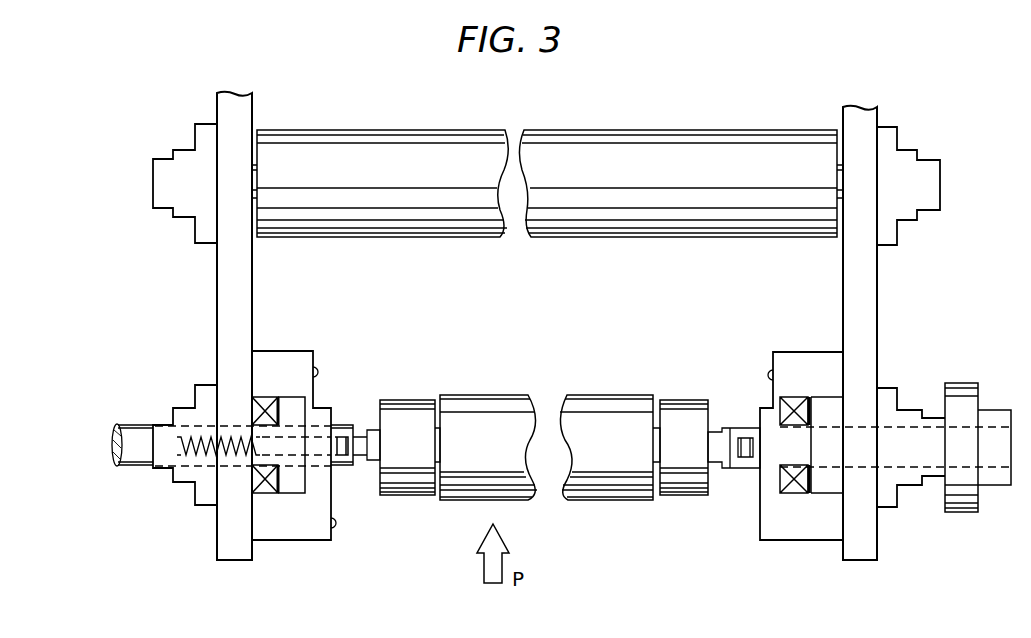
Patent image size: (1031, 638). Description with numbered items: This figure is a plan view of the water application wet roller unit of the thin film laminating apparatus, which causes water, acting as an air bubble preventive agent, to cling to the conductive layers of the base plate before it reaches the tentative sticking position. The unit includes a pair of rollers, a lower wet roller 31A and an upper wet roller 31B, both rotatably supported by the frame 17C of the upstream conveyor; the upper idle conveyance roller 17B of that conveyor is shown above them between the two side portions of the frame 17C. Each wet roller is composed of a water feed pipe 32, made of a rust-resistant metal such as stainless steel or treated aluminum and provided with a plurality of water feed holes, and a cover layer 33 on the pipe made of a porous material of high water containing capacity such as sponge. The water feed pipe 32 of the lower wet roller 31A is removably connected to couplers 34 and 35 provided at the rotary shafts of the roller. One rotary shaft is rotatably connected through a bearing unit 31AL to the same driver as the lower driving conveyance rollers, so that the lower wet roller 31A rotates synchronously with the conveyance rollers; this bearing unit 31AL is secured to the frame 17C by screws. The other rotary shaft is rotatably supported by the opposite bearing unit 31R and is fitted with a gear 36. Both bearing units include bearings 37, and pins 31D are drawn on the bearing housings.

The upper idle conveyance roller 17B is at (693, 148).
The frame 17C is at (229, 298).
The lower wet roller 31A is at (610, 402).
The bearing unit 31AL is at (287, 358).
The upper wet roller 31B is at (386, 148).
The housing pivot pin 31D is at (318, 372).
The right bearing housing 31R is at (793, 362).
The water feed pipe 32 is at (398, 405).
The cover layer 33 is at (686, 416).
The coupler 34 is at (348, 465).
The coupler 35 is at (746, 470).
The gear 36 is at (962, 503).
The bearing 37 is at (265, 498).